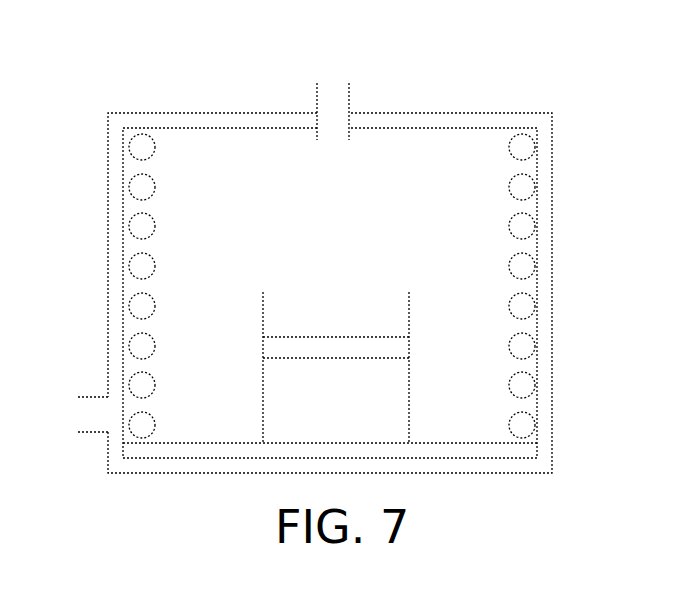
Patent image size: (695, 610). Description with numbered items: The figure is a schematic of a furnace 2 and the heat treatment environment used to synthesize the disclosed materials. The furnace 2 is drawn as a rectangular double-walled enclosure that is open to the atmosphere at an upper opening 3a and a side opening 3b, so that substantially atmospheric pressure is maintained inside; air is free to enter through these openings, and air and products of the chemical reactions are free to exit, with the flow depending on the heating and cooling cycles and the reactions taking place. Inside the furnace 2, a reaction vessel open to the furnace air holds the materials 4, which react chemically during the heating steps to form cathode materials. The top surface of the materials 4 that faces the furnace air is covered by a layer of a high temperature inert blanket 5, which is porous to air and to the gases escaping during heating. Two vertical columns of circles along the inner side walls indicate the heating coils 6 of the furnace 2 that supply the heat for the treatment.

The furnace 2 is at (552, 260).
The opening to atmosphere 3a is at (338, 92).
The opening to atmosphere 3b is at (82, 420).
The materials 4 is at (346, 416).
The high temperature inert blanket 5 is at (295, 345).
The heating coils 6 is at (508, 148).